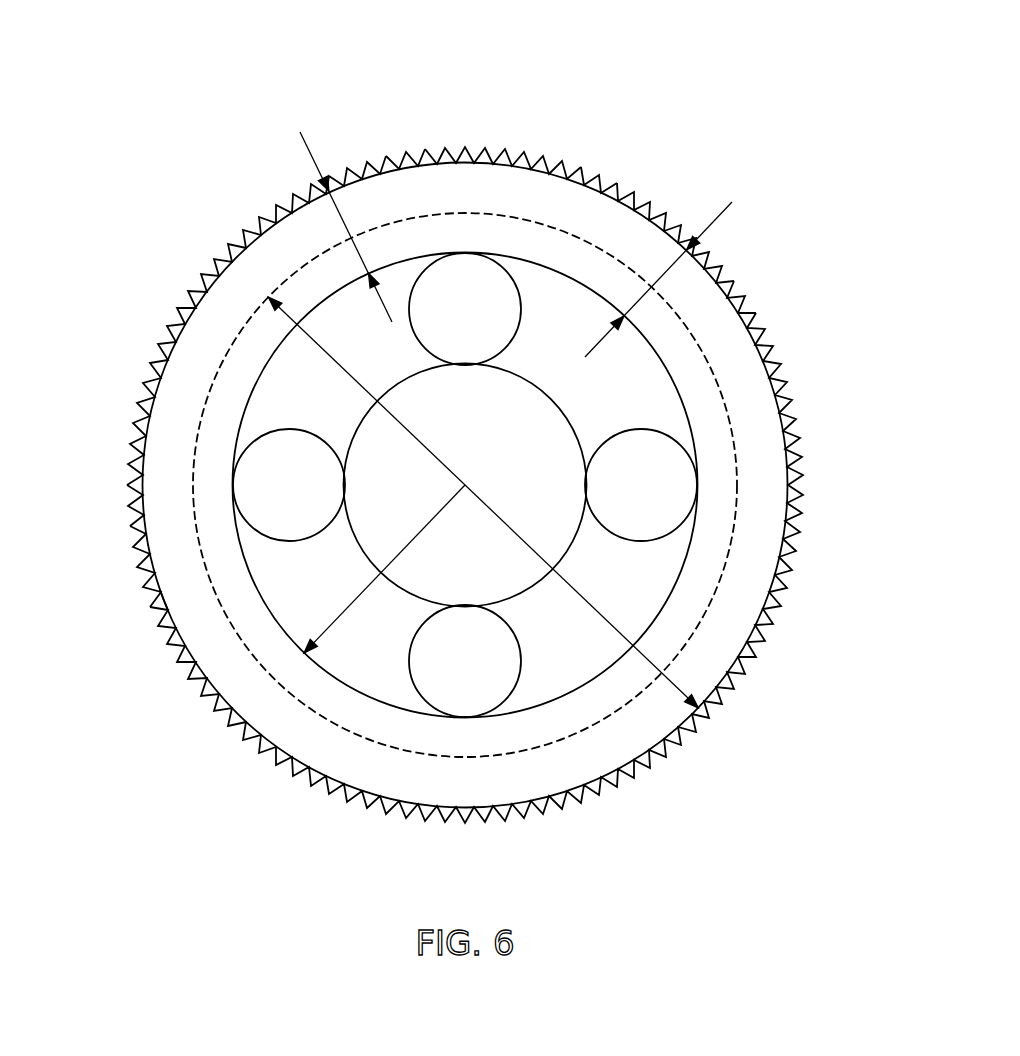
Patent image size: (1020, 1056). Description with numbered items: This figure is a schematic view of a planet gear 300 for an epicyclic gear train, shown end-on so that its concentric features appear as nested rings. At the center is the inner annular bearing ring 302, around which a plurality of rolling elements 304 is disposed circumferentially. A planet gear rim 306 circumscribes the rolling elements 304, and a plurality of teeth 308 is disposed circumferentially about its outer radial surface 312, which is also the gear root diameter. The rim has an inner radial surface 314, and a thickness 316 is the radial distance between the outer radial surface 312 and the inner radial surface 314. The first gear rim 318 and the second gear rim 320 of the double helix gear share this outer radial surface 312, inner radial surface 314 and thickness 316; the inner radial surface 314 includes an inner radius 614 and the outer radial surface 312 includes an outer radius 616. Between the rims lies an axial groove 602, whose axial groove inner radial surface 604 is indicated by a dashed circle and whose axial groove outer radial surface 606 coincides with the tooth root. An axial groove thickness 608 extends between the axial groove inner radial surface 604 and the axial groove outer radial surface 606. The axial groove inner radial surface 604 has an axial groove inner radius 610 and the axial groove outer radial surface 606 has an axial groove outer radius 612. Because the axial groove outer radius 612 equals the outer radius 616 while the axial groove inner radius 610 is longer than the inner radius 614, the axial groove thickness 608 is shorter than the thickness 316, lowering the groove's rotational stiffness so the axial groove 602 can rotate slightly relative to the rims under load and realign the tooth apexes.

The planet gear 300 is at (686, 67).
The inner annular bearing ring 302 is at (392, 586).
The rolling elements 304 is at (517, 342).
The planet gear rim 306 is at (149, 420).
The teeth 308 is at (399, 160).
The outer radial surface 312 is at (180, 635).
The inner radial surface 314 is at (252, 578).
The thickness 316 is at (732, 202).
The first gear rim 318 is at (119, 586).
The second gear rim 320 is at (767, 285).
The axial groove 602 is at (196, 242).
The axial groove inner radial surface 604 is at (505, 215).
The axial groove outer radial surface 606 is at (600, 166).
The axial groove thickness 608 is at (300, 133).
The axial groove inner radius 610 is at (432, 453).
The axial groove outer radius 612 is at (493, 512).
The inner radius 614 is at (412, 540).
The outer radius 616 is at (483, 502).